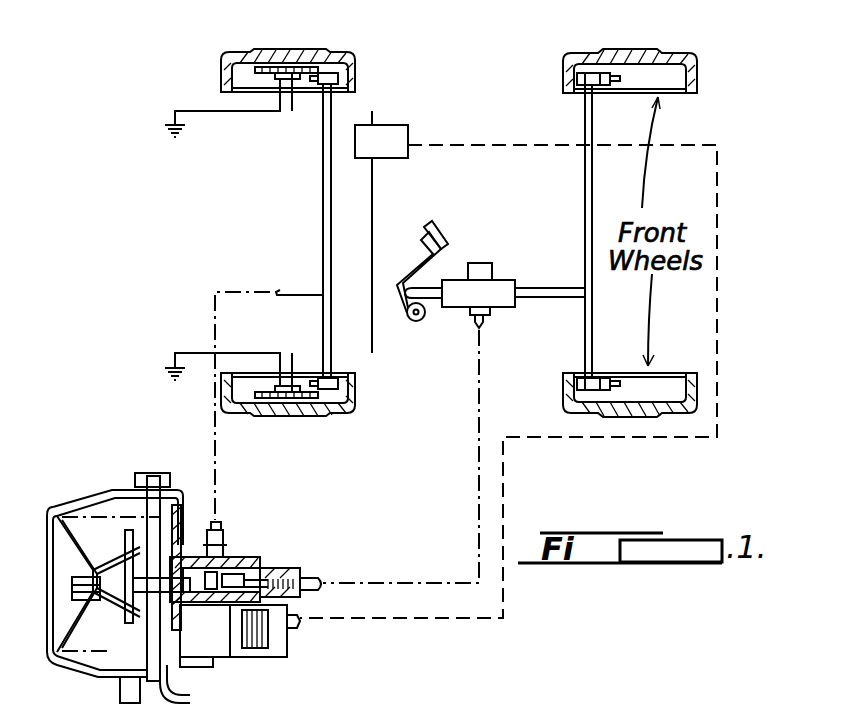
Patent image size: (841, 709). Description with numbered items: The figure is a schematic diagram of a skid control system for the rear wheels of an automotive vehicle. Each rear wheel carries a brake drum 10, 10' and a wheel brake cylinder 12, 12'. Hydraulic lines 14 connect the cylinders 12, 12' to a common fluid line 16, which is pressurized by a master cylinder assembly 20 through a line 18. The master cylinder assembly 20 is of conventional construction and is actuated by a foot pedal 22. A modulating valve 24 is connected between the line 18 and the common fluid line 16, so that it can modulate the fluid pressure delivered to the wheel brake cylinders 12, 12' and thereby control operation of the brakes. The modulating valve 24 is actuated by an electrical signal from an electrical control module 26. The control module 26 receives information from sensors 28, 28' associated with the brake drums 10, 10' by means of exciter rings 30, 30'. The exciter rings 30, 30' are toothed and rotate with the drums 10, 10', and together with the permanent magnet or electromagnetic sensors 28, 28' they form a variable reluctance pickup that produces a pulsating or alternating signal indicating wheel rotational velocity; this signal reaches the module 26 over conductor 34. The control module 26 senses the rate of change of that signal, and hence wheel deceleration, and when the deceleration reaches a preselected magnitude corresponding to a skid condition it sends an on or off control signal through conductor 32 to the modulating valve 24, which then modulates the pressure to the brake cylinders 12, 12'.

The brake drum 10 is at (256, 62).
The wheel brake cylinder 12 is at (341, 55).
The hydraulic lines 14 is at (323, 218).
The common fluid line 16 is at (293, 292).
The line 18 is at (315, 578).
The master cylinder assembly 20 is at (502, 280).
The foot pedal 22 is at (437, 228).
The modulating valve 24 is at (65, 490).
The electrical control module 26 is at (350, 152).
The sensor 28 is at (257, 117).
The exciter ring 30 is at (286, 114).
The conductor 32 is at (488, 135).
The conductor 34 is at (373, 118).
The brake drum 10' is at (325, 388).
The wheel brake cylinder 12' is at (354, 406).
The sensor 28' is at (264, 354).
The exciter ring 30' is at (289, 422).